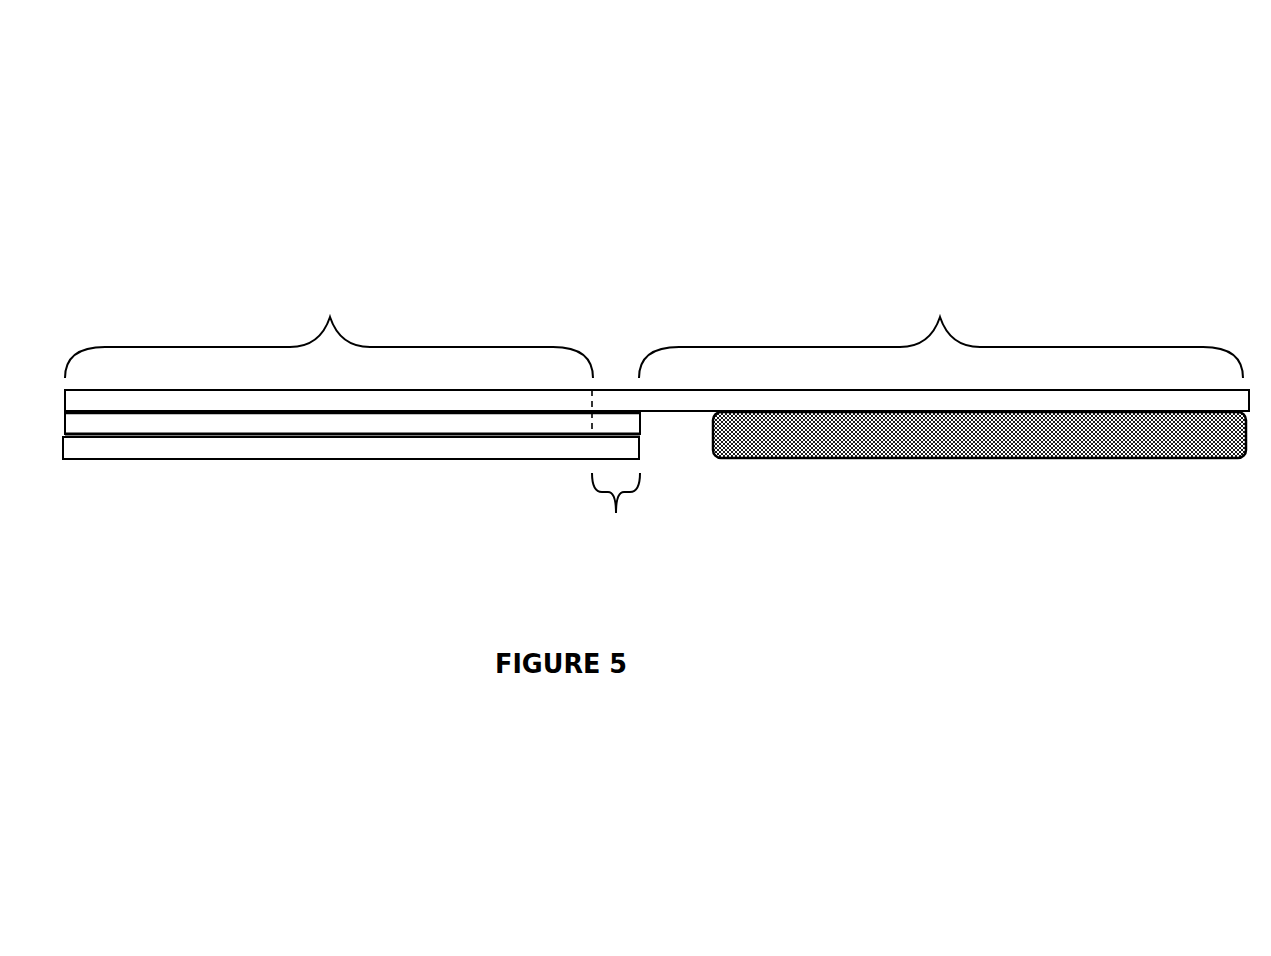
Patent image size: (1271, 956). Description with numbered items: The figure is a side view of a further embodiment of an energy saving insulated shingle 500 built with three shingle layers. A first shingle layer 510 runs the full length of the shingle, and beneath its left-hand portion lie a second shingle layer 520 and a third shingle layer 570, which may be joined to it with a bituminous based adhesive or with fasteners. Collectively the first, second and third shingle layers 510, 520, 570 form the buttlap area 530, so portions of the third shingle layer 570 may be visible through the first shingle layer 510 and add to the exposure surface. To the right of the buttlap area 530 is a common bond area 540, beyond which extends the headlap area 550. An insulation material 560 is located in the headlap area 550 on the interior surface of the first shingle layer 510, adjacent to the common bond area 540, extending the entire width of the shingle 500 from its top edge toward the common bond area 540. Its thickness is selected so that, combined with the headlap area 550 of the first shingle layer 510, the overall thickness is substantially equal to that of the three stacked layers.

The energy saving insulated shingle 500 is at (703, 212).
The first shingle layer 510 is at (146, 392).
The second shingle layer 520 is at (327, 428).
The buttlap area 530 is at (329, 329).
The common bond area 540 is at (609, 514).
The headlap area 550 is at (941, 332).
The insulation material 560 is at (863, 433).
The third shingle layer 570 is at (413, 452).